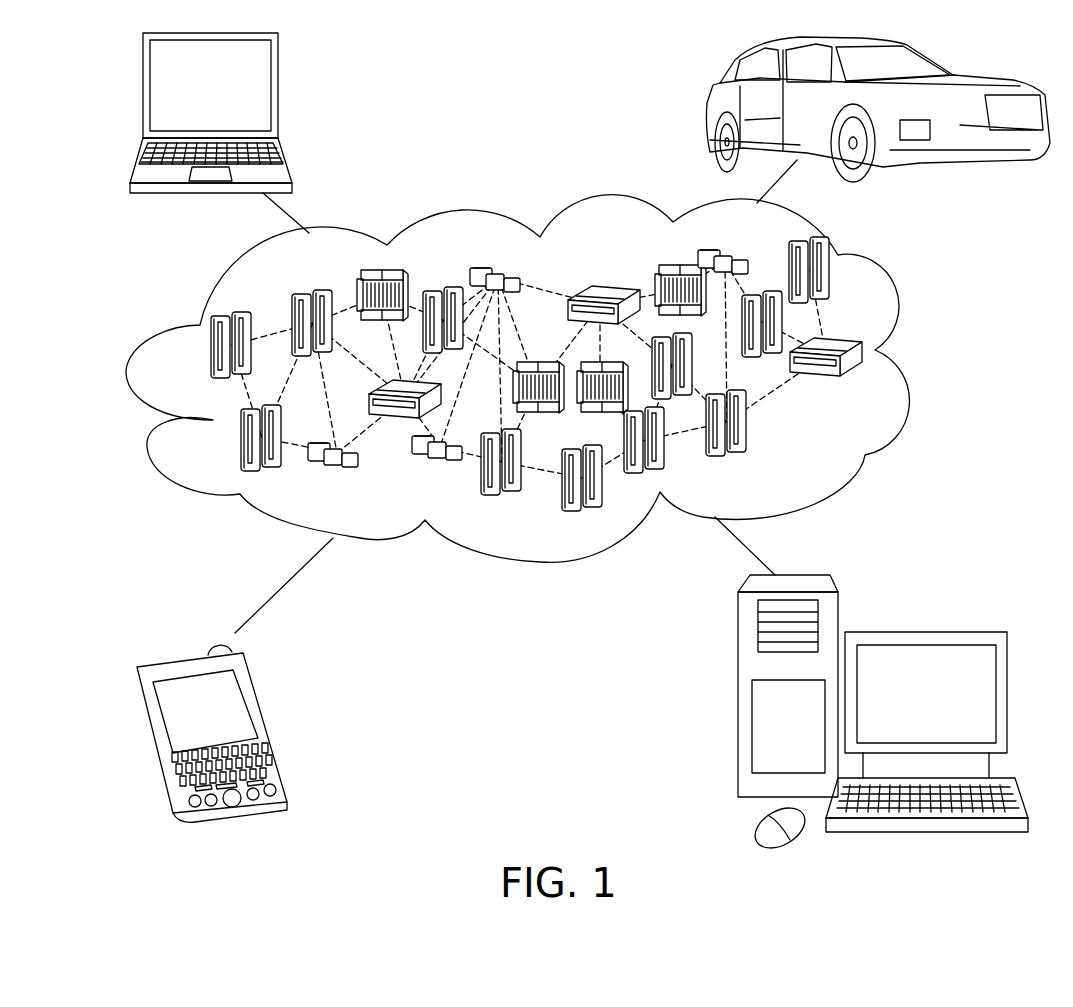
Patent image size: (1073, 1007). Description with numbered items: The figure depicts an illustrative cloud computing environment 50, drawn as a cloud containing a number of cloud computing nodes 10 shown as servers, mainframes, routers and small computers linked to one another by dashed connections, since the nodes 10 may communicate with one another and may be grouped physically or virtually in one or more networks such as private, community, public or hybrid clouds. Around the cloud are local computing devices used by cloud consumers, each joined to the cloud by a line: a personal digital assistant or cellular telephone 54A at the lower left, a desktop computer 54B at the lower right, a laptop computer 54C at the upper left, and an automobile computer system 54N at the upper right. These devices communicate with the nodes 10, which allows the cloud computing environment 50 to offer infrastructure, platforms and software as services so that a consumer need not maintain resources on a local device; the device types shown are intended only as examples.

The cloud computing node 10 is at (890, 390).
The cloud computing environment 50 is at (925, 356).
The personal digital assistant or cellular telephone 54A is at (268, 722).
The desktop computer 54B is at (922, 632).
The laptop computer 54C is at (280, 91).
The automobile computer system 54N is at (708, 108).